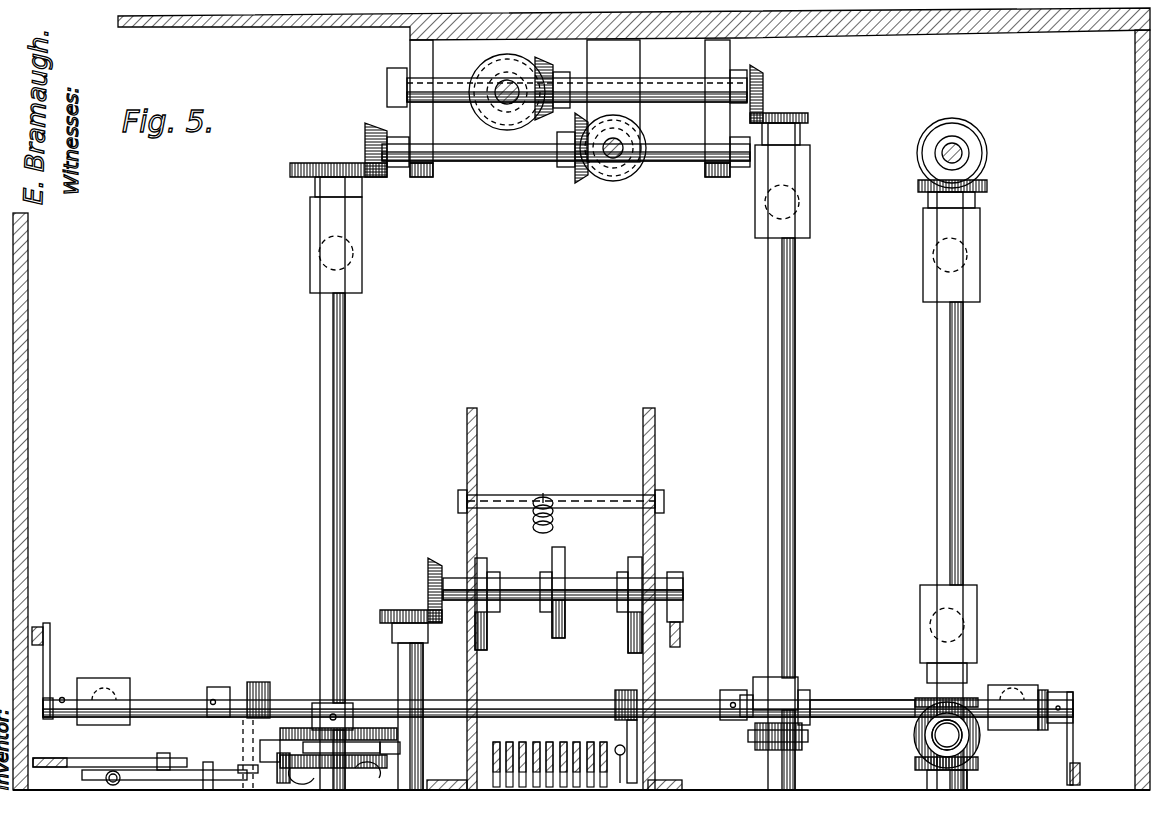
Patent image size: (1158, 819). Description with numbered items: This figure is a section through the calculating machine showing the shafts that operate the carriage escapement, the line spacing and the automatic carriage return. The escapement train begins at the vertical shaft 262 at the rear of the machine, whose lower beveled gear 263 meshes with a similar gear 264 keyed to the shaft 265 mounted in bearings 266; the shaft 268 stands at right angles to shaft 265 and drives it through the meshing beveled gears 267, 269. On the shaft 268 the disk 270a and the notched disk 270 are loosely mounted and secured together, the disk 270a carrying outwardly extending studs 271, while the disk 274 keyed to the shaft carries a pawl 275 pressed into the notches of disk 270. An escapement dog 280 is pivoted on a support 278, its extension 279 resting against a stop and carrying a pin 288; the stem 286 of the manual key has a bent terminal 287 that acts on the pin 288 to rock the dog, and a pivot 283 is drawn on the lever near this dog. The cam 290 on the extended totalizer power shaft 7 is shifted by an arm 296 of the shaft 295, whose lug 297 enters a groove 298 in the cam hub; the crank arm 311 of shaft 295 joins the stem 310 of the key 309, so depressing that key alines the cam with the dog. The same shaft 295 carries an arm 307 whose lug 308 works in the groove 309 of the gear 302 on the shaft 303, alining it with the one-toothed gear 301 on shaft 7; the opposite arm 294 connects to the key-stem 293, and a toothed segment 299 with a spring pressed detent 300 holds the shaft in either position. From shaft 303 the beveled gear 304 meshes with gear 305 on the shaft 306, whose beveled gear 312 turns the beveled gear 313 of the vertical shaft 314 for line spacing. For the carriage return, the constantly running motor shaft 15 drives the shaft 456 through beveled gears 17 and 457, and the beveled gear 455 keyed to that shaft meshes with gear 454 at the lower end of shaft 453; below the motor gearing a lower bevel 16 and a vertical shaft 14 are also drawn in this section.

The extended totalizer power shaft 7 is at (398, 705).
The vertical shaft 14 is at (965, 786).
The motor shaft 15 is at (935, 738).
The bevel gear 16 is at (975, 764).
The beveled gear 17 is at (978, 742).
The vertical shaft 262 is at (613, 160).
The beveled gear 263 is at (632, 165).
The beveled gear 264 is at (580, 172).
The shaft 265 is at (515, 160).
The bearings 266 is at (420, 178).
The beveled gear 267 is at (372, 128).
The shaft 268 is at (322, 383).
The beveled gear 269 is at (320, 165).
The notched disk 270 is at (305, 772).
The disk 270a is at (380, 752).
The studs 271 is at (345, 770).
The disk 274 is at (300, 727).
The pawl 275 is at (296, 725).
The support 278 is at (228, 796).
The extension 279 is at (193, 778).
The escapement dog 280 is at (282, 782).
The pivot 283 is at (108, 784).
The stem 286 is at (55, 760).
The terminal 287 is at (115, 752).
The pin 288 is at (163, 755).
The cam 290 is at (246, 770).
The key-stem 293 is at (1075, 768).
The arm 294 is at (1072, 735).
The shaft 295 is at (840, 704).
The arm 296 is at (230, 700).
The lug 297 is at (233, 720).
The groove 298 is at (285, 708).
The toothed segment 299 is at (620, 710).
The spring pressed detent 300 is at (632, 718).
The one-toothed gear 301 is at (742, 722).
The gear 302 is at (795, 752).
The shaft 303 is at (770, 348).
The beveled gear 304 is at (812, 100).
The gear 305 is at (757, 70).
The shaft 306 is at (661, 92).
The arm 307 is at (738, 690).
The lug 308 is at (745, 718).
The key 309 is at (800, 700).
The stem 310 is at (38, 625).
The crank arm 311 is at (47, 658).
The beveled gear 312 is at (556, 75).
The beveled gear 313 is at (482, 108).
The shaft 314 is at (500, 86).
The shaft 453 is at (952, 148).
The beveled gear 454 is at (928, 135).
The beveled gear 455 is at (925, 186).
The shaft 456 is at (940, 352).
The beveled gear 457 is at (922, 698).